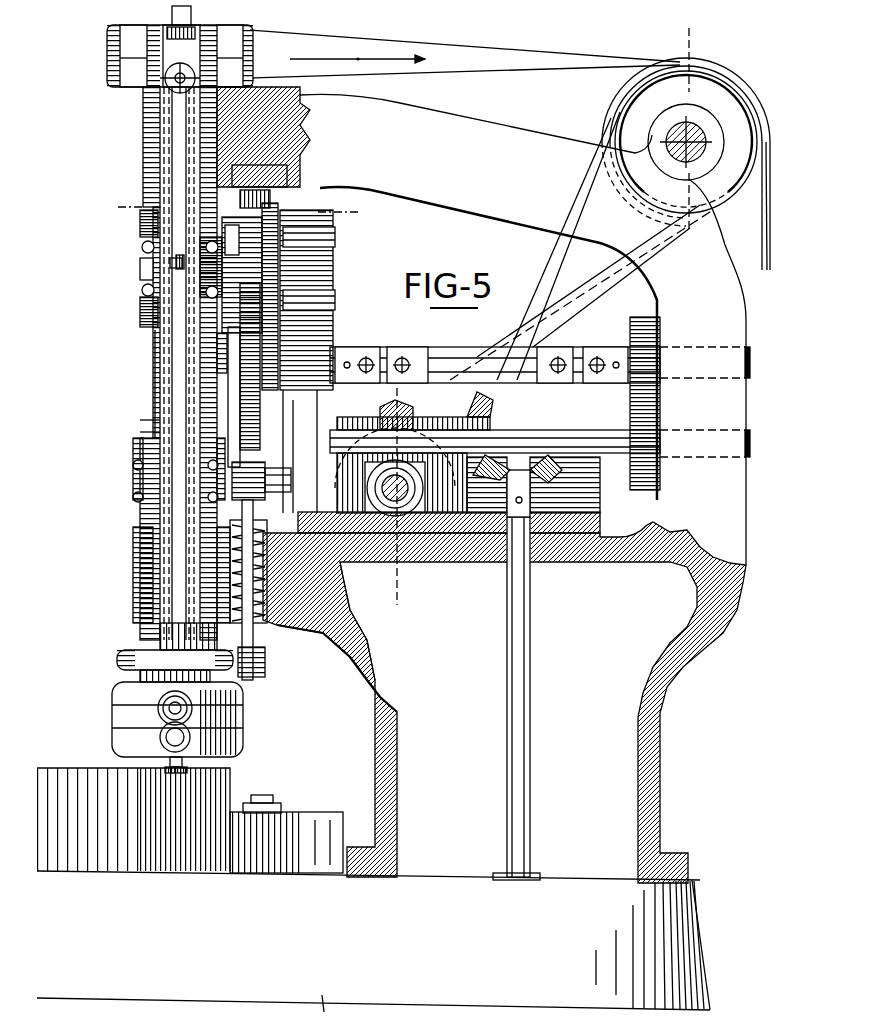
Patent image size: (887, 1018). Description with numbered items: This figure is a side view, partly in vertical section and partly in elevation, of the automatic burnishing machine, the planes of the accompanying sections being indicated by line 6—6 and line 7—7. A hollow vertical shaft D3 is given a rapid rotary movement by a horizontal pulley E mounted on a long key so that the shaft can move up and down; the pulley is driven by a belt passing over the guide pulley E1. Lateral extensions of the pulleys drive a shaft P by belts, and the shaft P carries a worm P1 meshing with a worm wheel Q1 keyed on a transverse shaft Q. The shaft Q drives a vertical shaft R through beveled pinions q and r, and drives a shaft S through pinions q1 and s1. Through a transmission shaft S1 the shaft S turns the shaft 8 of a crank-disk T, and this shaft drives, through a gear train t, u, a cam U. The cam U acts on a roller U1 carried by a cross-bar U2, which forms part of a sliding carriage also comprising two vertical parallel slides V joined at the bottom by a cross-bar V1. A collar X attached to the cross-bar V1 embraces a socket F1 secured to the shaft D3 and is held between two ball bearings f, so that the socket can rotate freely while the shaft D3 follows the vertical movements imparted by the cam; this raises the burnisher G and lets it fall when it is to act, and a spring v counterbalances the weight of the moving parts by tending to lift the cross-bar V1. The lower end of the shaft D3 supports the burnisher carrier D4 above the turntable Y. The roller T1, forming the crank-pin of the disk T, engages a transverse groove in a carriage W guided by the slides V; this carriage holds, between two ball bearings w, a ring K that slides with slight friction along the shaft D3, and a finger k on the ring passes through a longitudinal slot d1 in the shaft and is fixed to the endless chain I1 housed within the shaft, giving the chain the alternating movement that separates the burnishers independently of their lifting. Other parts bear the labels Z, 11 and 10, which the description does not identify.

The horizontal pulley E is at (110, 78).
The guide pulley E1 is at (622, 118).
The cross-bar U2 is at (318, 142).
The roller U1 is at (305, 172).
The gear of gear train u is at (270, 201).
The cam U is at (300, 268).
The section line 7— 7 is at (233, 213).
The finger k is at (179, 252).
The ball bearings w is at (140, 258).
The carriage W is at (138, 250).
The ring K is at (217, 275).
The roller (crank-pin) T1 is at (195, 328).
The crank-disk T is at (257, 368).
The gear of gear train t is at (300, 451).
The longitudinal slot d1 is at (155, 382).
The endless chain I1 is at (155, 420).
The hollow vertical shaft D3 is at (150, 432).
The ball bearings f is at (133, 466).
The collar X is at (133, 482).
The socket F1 is at (135, 520).
The vertical parallel slides V is at (232, 455).
The cross-bar V1 is at (262, 466).
The spring v is at (262, 622).
The shaft P is at (345, 488).
The worm P1 is at (432, 553).
The section line 6— 6 is at (544, 307).
The burnisher carrier D4 is at (122, 720).
The turntable Y is at (98, 783).
The burnisher G is at (184, 763).
The support Z is at (318, 832).
The vertical shaft R is at (512, 715).
The shaft of crank-disk 8 is at (320, 355).
The shaft S is at (748, 370).
The transmission shaft S1 is at (480, 360).
The pinion s1 is at (633, 383).
The link 11 is at (545, 248).
The shaft Q is at (575, 440).
The worm wheel Q1 is at (383, 418).
The beveled pinion q is at (494, 407).
The pinion q1 is at (633, 478).
The beveled pinion r is at (565, 480).
The base 10 is at (320, 1006).